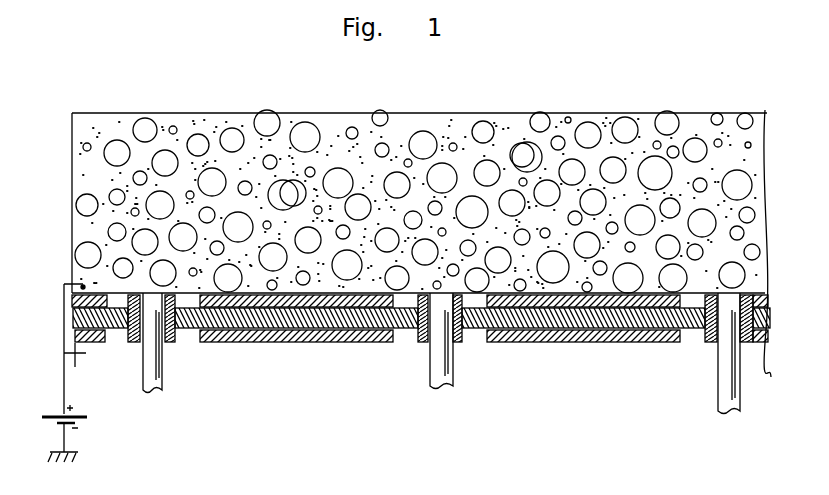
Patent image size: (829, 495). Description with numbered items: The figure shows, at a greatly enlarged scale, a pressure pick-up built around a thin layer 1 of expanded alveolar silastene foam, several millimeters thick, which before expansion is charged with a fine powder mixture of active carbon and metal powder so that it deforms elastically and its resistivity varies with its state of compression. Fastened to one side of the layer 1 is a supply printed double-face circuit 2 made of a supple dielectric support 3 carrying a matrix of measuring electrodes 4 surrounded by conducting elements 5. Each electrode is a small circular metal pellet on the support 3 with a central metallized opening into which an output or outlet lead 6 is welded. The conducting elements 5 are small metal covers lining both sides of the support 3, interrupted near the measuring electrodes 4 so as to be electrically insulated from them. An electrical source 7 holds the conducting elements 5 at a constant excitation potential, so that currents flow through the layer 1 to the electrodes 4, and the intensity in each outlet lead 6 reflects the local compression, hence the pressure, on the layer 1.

The layer 1 is at (183, 121).
The supply printed double-face circuit 2 is at (333, 343).
The supple dielectric support 3 is at (583, 343).
The measuring electrodes 4 is at (455, 343).
The conducting elements 5 is at (663, 343).
The output or outlet lead 6 is at (165, 345).
The electrical source 7 is at (80, 433).